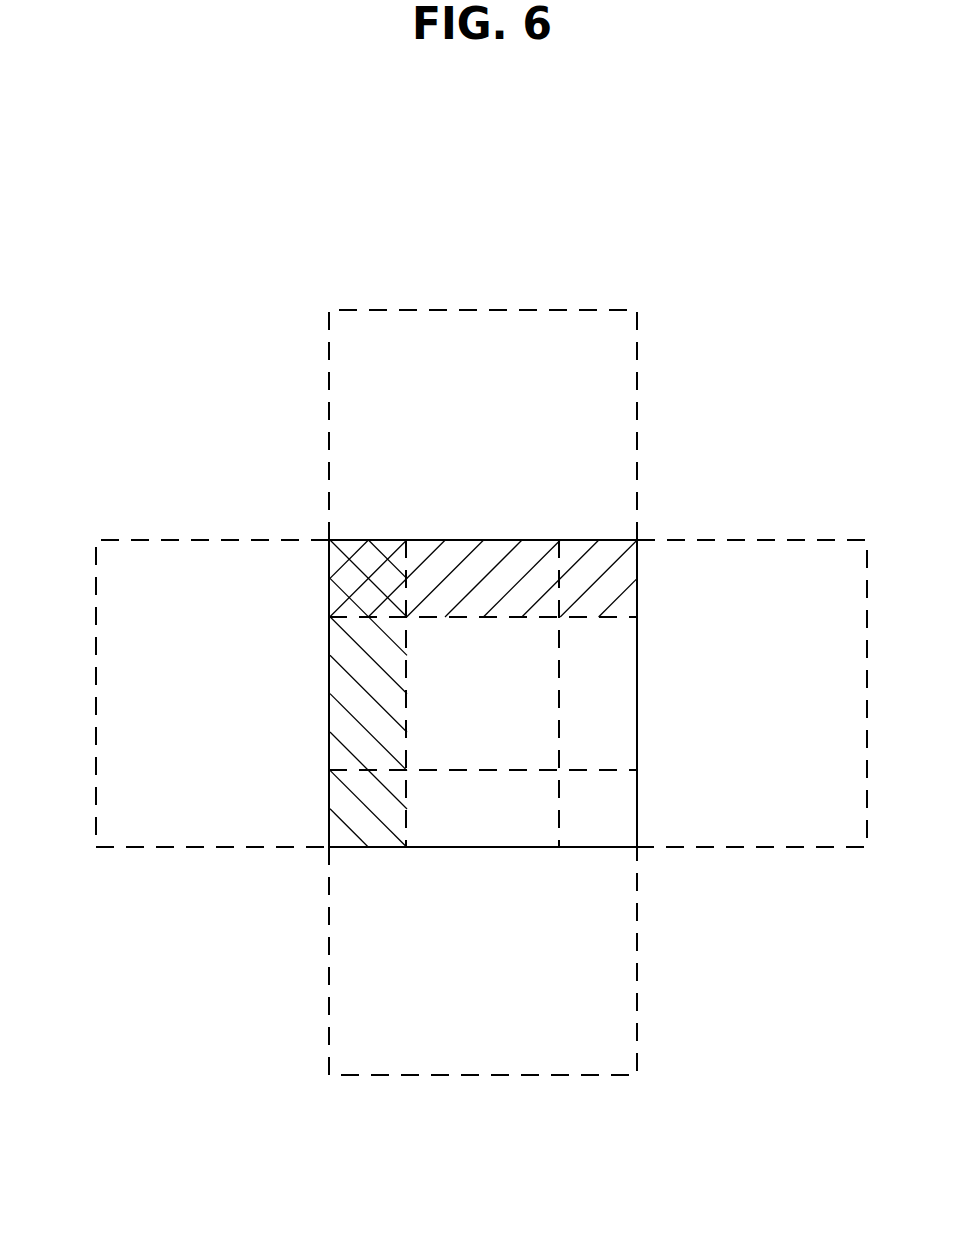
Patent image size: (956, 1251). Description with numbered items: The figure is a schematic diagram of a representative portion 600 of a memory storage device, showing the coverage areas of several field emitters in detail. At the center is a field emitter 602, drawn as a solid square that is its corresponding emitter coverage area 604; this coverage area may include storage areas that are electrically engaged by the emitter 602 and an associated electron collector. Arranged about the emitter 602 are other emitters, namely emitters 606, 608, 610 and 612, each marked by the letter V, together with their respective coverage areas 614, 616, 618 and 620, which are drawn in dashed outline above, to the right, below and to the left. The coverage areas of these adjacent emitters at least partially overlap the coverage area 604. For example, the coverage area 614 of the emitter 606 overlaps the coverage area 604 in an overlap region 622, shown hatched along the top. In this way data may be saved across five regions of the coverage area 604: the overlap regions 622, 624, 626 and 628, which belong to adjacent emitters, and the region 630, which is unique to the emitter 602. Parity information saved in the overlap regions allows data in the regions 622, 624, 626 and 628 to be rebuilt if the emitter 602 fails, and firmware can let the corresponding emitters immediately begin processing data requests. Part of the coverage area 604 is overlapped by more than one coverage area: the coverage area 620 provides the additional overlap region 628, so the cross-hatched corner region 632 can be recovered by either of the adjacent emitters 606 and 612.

The representative portion of memory storage device 600 is at (130, 268).
The field emitter 602 is at (483, 665).
The emitter coverage area 604 is at (504, 820).
The emitter 606 is at (481, 435).
The emitter 608 is at (713, 665).
The emitter 610 is at (483, 950).
The emitter 612 is at (252, 667).
The coverage area 614 is at (395, 310).
The coverage area 616 is at (703, 540).
The coverage area 618 is at (638, 988).
The coverage area 620 is at (163, 538).
The overlap region 622 is at (483, 558).
The overlap region 624 is at (617, 682).
The overlap region 626 is at (543, 822).
The overlap region 628 is at (342, 685).
The region unique to emitter 630 is at (425, 748).
The region 632 is at (368, 558).